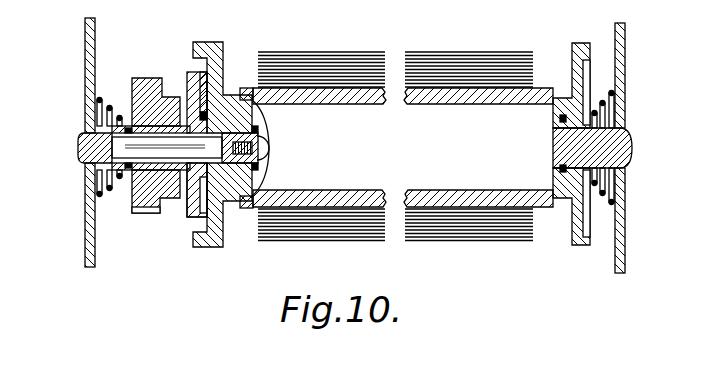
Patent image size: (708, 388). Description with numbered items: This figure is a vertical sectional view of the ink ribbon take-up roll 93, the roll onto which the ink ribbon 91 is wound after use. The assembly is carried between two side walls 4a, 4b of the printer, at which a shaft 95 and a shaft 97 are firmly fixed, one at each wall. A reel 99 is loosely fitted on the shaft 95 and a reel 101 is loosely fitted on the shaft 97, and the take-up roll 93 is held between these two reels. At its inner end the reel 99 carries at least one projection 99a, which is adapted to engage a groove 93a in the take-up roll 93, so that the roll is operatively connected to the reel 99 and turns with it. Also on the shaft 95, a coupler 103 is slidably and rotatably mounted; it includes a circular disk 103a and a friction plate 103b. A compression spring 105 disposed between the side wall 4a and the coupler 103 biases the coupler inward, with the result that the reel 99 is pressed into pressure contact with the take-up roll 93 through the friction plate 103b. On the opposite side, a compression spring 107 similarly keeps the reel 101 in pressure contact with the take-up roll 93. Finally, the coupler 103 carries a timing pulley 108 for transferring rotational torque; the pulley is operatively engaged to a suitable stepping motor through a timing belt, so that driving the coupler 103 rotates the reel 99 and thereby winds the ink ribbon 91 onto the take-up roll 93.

The side wall 4a is at (86, 211).
The side wall 4b is at (625, 243).
The ink ribbon 91 is at (446, 52).
The take-up roll 93 is at (350, 105).
The groove 93a is at (270, 128).
The shaft 95 is at (82, 147).
The shaft 97 is at (633, 145).
The reel 99 is at (212, 248).
The projection 99a is at (270, 105).
The reel 101 is at (584, 247).
The coupler 103 is at (182, 222).
The circular disk 103a is at (190, 78).
The friction plate 103b is at (208, 80).
The compression spring 105 is at (112, 98).
The compression spring 107 is at (611, 92).
The timing pulley 108 is at (146, 218).